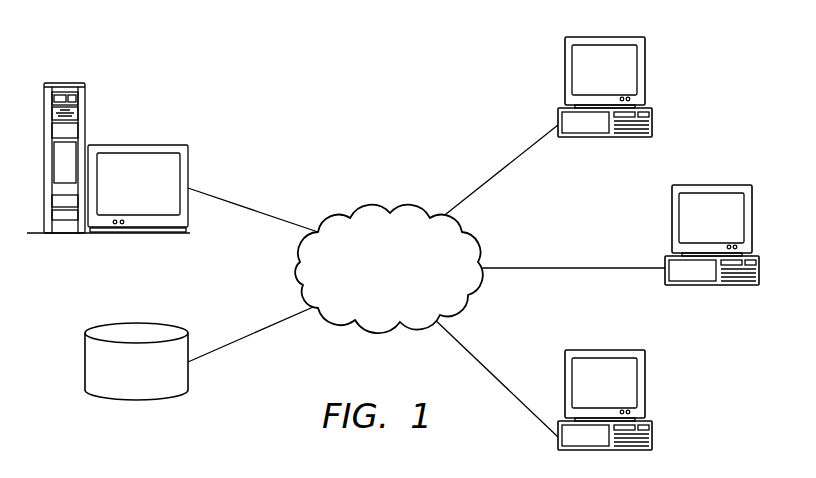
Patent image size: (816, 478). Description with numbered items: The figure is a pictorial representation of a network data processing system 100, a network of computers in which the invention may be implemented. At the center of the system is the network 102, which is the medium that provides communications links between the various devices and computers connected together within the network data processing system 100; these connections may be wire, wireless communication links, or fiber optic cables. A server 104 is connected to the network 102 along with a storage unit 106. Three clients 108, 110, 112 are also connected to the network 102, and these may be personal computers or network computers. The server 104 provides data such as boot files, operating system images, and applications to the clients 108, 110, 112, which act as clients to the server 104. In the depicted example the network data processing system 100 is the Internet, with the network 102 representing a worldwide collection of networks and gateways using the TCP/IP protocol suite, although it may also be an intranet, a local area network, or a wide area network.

The network data processing system 100 is at (266, 70).
The network 102 is at (373, 291).
The server 104 is at (85, 103).
The storage unit 106 is at (85, 358).
The client 108 is at (647, 80).
The client 110 is at (752, 222).
The client 112 is at (647, 388).